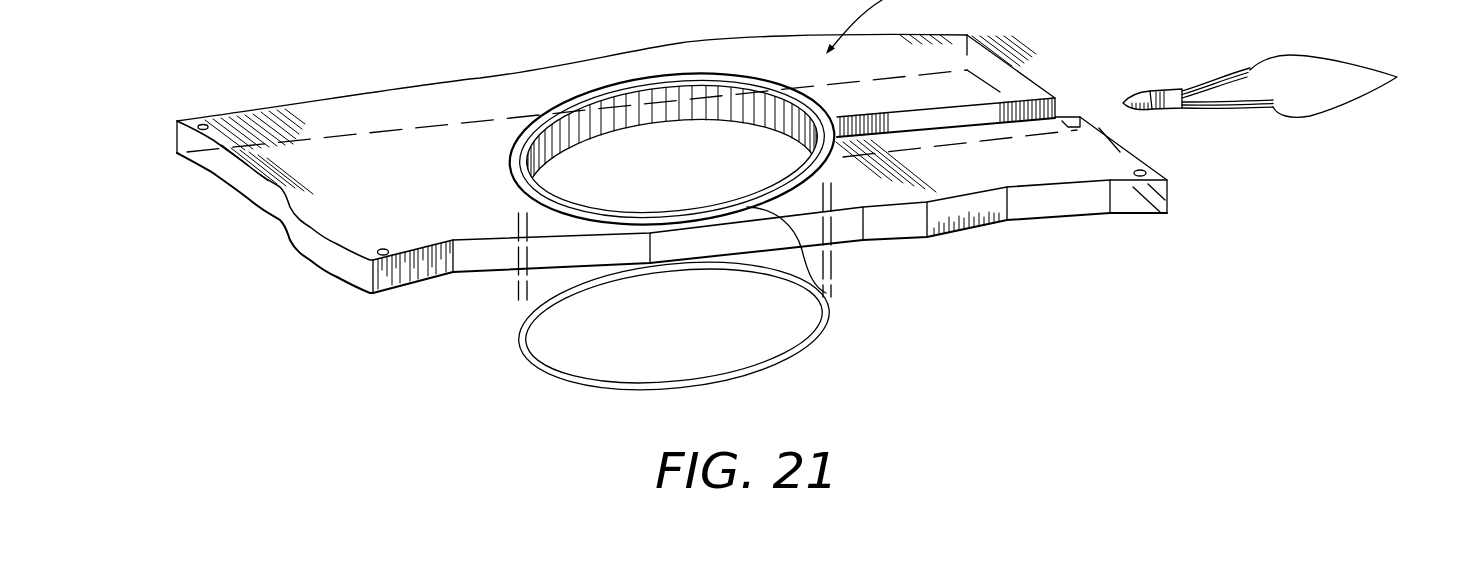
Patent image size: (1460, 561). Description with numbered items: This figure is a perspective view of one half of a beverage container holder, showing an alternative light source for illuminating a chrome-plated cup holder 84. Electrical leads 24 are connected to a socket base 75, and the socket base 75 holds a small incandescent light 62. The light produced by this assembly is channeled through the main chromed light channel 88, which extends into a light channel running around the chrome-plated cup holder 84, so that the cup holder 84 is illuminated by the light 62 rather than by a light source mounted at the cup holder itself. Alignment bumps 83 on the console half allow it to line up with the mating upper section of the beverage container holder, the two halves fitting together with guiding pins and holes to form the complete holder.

The alignment bumps 83 is at (205, 130).
The chrome-plated cup holder 84 is at (828, 292).
The main chromed light channel 88 is at (1060, 115).
The socket base 75 is at (1160, 90).
The small incandescent light 62 is at (1140, 110).
The electrical leads 24 is at (1346, 85).